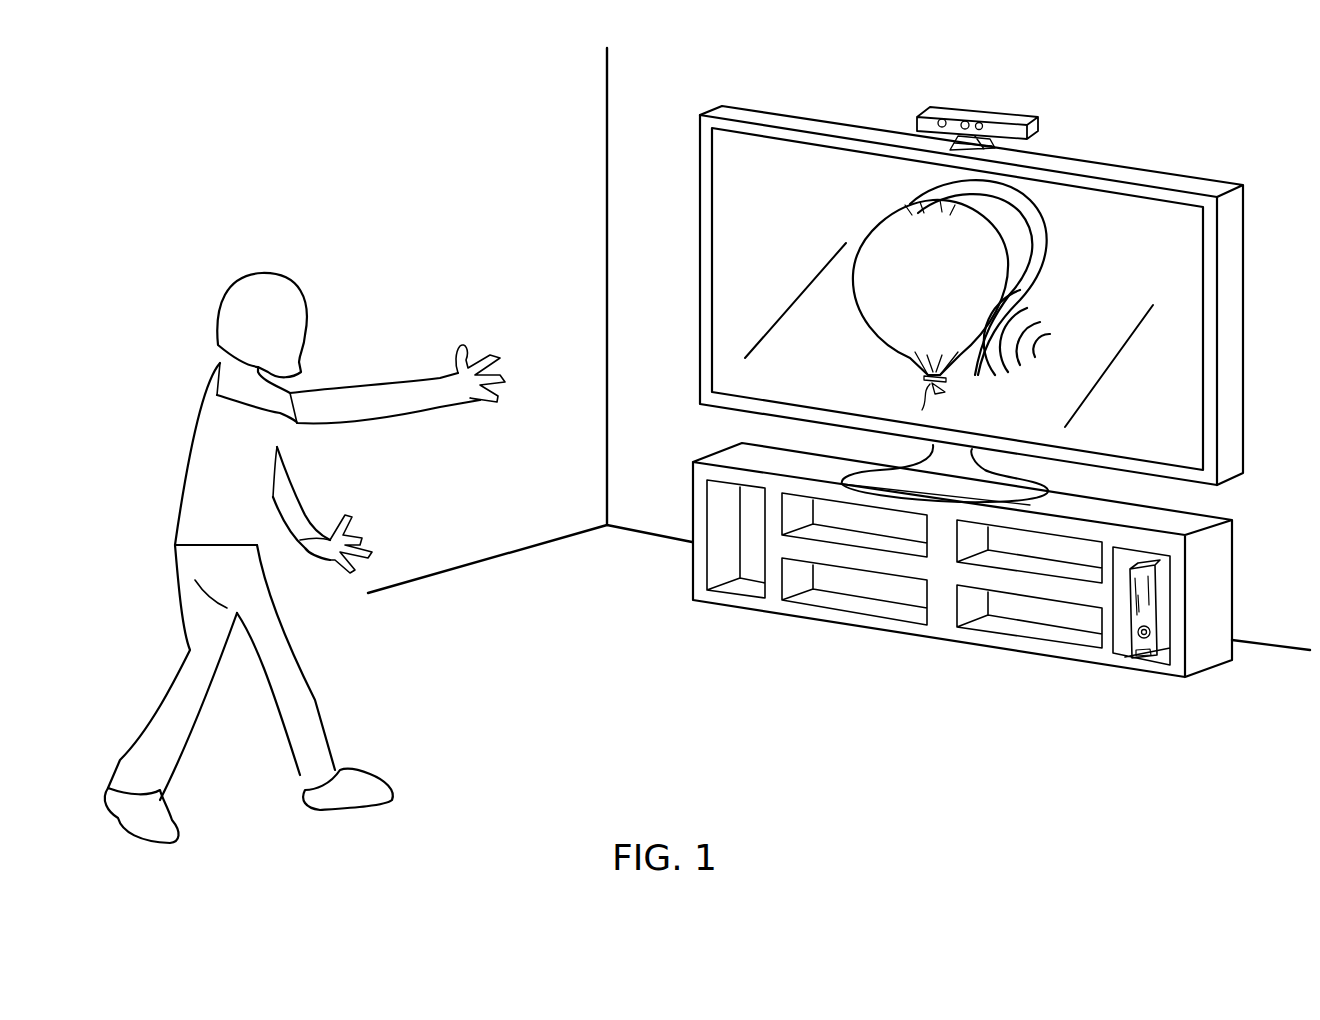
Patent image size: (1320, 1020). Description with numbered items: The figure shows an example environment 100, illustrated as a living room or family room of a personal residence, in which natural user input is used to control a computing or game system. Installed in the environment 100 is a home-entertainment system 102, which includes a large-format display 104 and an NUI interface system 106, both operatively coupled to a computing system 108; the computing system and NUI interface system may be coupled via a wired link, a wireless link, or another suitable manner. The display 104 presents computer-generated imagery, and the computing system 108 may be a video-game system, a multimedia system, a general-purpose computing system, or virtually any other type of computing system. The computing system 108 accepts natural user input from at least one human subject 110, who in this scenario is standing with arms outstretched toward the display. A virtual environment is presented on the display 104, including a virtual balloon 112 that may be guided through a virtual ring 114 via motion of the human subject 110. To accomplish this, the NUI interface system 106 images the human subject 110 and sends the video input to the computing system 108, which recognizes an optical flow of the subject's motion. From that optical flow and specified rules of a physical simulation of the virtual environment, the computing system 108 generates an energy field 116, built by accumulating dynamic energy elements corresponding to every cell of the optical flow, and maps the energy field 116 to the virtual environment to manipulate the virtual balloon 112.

The environment 100 is at (250, 132).
The home-entertainment system 102 is at (1158, 129).
The large-format display 104 is at (970, 343).
The NUI interface system 106 is at (1031, 118).
The computing system 108 is at (1138, 658).
The human subject 110 is at (214, 283).
The virtual balloon 112 is at (880, 226).
The virtual ring 114 is at (1042, 238).
The energy field 116 is at (1050, 299).